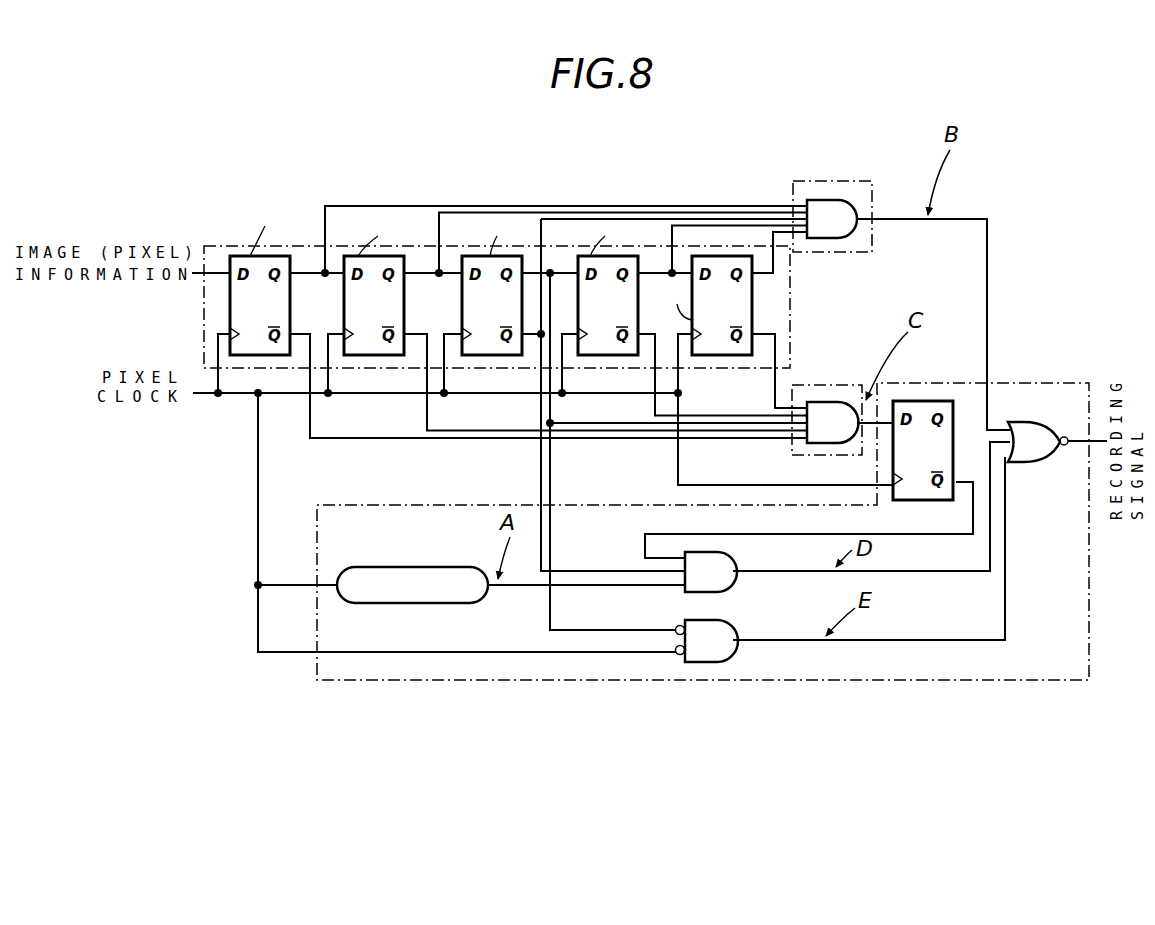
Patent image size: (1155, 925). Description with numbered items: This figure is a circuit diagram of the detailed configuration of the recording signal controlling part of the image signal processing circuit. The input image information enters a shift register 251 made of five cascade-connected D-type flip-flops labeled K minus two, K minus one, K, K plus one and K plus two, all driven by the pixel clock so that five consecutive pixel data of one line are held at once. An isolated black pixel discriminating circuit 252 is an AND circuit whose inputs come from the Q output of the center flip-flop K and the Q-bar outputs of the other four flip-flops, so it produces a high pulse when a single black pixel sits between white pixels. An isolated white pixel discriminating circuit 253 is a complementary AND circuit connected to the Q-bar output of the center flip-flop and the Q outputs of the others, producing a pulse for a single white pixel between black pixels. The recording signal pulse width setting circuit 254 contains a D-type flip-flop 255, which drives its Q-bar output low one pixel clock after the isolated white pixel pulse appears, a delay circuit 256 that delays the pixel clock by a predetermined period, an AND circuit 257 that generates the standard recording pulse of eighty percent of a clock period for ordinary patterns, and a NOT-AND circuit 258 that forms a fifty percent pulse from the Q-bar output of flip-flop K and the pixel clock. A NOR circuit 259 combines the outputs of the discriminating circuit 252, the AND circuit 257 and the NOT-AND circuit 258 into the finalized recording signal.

The shift register 251 is at (800, 318).
The isolated black pixel discriminating circuit 252 is at (840, 181).
The isolated white pixel discriminating circuit 253 is at (815, 385).
The recording signal pulse width setting circuit 254 is at (1012, 383).
The D-type flip-flop 255 is at (928, 401).
The delay circuit 256 is at (378, 567).
The AND circuit 257 is at (726, 553).
The NOT-AND circuit 258 is at (726, 621).
The NOR circuit 259 is at (1040, 420).